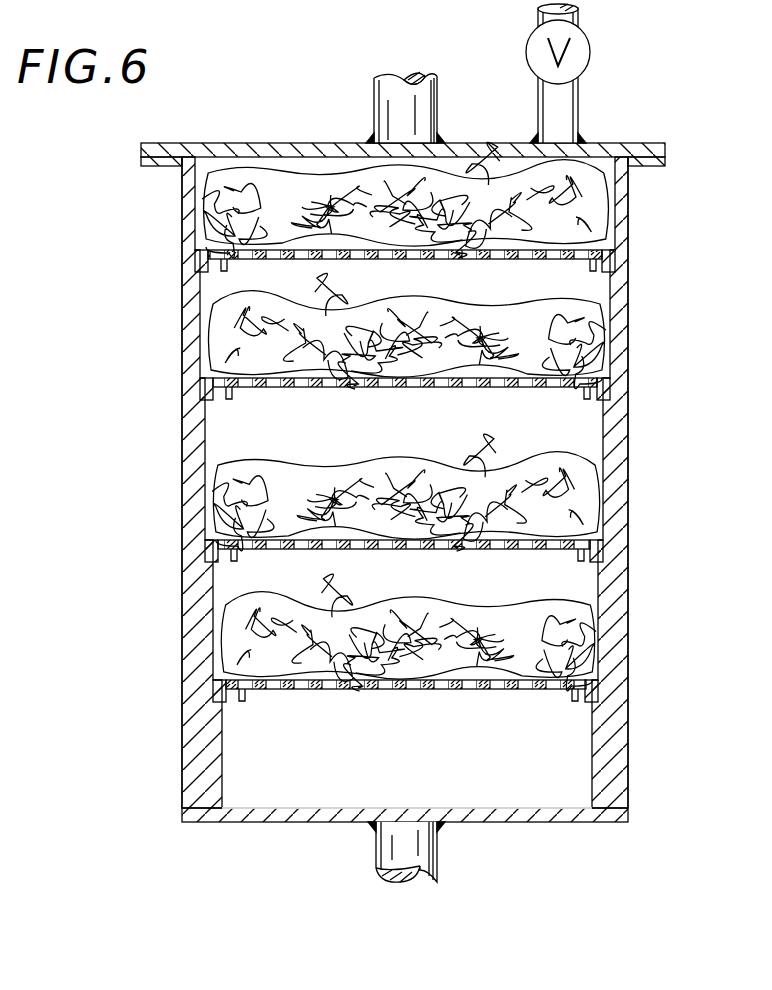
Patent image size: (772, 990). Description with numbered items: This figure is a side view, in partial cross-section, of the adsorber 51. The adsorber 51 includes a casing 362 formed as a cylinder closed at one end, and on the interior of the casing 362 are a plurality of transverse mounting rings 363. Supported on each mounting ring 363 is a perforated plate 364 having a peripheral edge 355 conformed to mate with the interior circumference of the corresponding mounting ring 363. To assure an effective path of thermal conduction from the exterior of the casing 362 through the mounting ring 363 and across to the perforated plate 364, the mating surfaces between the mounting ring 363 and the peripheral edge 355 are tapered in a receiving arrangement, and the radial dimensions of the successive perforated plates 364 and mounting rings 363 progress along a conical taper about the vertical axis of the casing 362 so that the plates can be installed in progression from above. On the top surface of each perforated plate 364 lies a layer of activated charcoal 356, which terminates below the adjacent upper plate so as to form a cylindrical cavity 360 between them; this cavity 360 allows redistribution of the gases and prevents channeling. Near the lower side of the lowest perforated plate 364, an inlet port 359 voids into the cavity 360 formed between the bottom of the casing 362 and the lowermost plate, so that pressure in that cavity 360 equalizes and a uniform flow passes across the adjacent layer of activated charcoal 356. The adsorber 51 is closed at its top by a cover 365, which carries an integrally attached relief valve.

The adsorber 51 is at (638, 413).
The peripheral edge 355 is at (230, 262).
The layer of activated charcoal 356 is at (490, 217).
The inlet port 359 is at (437, 848).
The cylindrical cavity 360 is at (337, 158).
The casing 362 is at (629, 281).
The transverse mounting ring 363 is at (196, 264).
The perforated plate 364 is at (337, 250).
The cover 365 is at (482, 143).